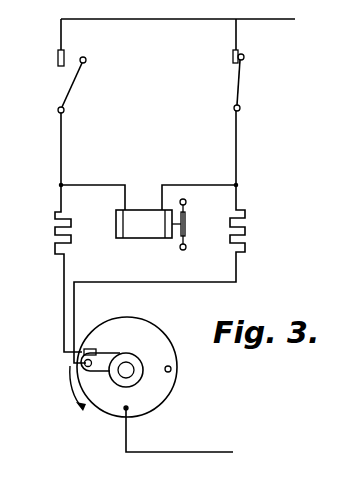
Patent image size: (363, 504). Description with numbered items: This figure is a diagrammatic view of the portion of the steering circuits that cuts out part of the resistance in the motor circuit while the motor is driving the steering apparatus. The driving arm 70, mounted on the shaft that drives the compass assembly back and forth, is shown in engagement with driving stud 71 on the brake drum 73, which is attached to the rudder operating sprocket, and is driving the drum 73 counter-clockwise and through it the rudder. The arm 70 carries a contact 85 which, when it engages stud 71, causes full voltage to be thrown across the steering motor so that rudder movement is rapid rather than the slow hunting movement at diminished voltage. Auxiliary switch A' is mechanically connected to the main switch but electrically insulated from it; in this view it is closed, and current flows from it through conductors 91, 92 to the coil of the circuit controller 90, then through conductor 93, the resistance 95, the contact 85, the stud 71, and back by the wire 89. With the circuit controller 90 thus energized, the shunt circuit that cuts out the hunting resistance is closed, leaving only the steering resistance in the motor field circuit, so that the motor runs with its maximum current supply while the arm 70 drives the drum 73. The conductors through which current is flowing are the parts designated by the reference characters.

The auxiliary switch A' is at (249, 80).
The driving arm 70 is at (106, 351).
The driving stud 71 is at (78, 365).
The brake drum 73 is at (108, 412).
The contact 85 is at (81, 378).
The wire 89 is at (211, 452).
The circuit controller 90 is at (151, 221).
The conductor 91 is at (246, 149).
The conductor 92 is at (199, 188).
The conductor 93 is at (93, 189).
The resistance 95 is at (139, 274).